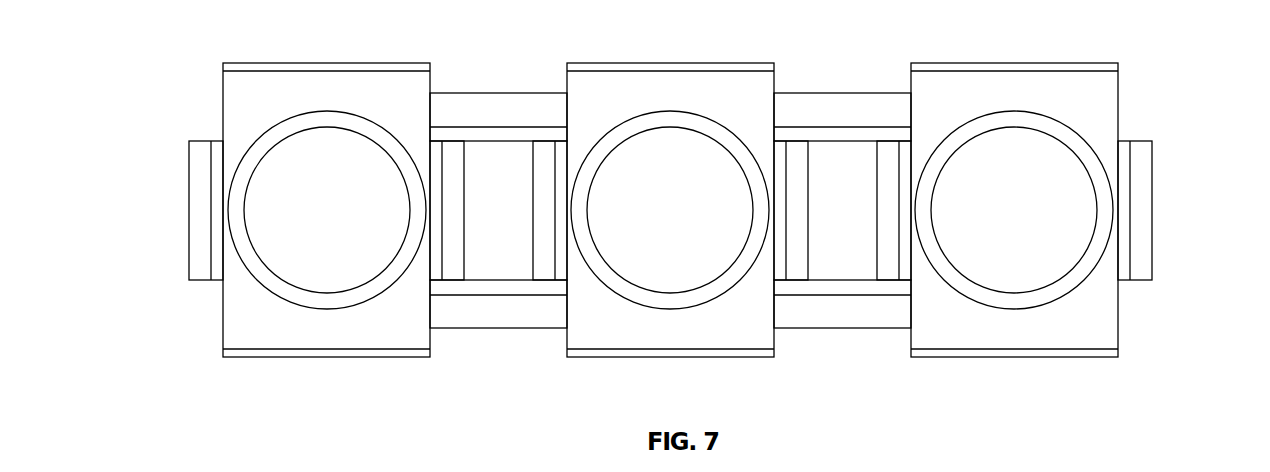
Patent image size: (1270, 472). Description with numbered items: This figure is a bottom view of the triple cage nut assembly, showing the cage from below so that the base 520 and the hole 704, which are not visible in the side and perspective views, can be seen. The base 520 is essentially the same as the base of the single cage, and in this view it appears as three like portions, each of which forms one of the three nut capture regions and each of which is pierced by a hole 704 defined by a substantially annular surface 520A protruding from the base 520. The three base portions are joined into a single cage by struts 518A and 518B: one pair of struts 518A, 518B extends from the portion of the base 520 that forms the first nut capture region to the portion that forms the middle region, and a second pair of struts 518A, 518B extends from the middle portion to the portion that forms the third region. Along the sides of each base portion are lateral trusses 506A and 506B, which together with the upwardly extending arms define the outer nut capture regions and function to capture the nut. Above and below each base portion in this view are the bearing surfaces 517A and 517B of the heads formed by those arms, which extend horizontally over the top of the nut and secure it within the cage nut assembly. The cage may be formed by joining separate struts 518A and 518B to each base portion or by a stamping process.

The base 520 is at (1138, 291).
The substantially annular surface 520A is at (366, 129).
The hole 704 is at (307, 221).
The bearing surface 517A is at (328, 357).
The bearing surface 517B is at (278, 68).
The strut 518A is at (505, 318).
The strut 518B is at (490, 115).
The lateral truss 506A is at (453, 222).
The lateral truss 506B is at (202, 213).